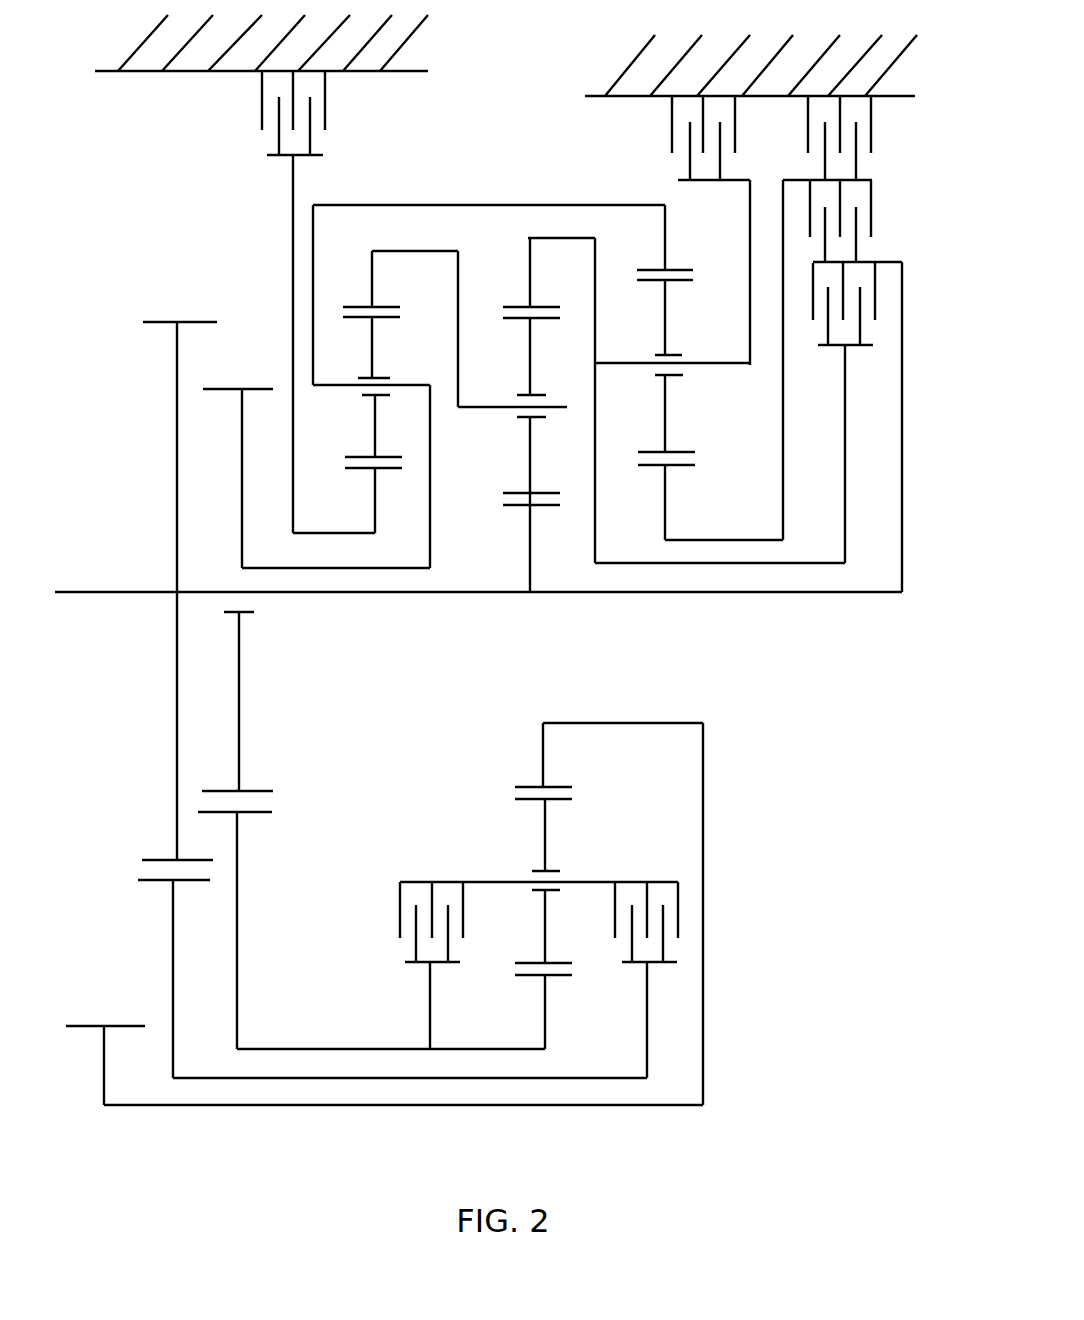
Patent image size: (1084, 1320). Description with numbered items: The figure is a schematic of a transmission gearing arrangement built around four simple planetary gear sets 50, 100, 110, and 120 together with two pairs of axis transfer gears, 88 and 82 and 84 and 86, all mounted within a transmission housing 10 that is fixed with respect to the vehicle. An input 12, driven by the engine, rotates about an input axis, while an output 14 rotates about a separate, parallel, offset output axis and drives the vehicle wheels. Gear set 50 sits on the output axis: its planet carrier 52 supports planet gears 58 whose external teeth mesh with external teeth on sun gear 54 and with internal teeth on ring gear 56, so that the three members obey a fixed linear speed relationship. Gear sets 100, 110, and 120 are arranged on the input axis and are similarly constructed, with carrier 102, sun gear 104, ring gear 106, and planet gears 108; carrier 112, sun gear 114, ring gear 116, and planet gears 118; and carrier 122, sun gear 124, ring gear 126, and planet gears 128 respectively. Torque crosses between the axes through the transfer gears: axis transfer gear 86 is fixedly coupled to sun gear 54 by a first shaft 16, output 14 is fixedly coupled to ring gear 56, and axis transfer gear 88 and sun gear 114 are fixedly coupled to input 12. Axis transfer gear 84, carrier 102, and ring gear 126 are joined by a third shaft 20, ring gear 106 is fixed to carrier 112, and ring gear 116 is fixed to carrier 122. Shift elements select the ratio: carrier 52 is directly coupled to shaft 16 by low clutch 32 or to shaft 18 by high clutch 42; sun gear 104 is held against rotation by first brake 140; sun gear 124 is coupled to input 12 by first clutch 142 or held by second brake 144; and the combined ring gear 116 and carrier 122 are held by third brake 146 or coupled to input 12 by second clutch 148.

The transmission housing 10 is at (408, 38).
The input 12 is at (752, 590).
The output 14 is at (92, 1072).
The first shaft 16 is at (327, 1048).
The shaft 18 is at (602, 1077).
The third shaft 20 is at (257, 567).
The low clutch 32 is at (400, 917).
The high clutch 42 is at (660, 880).
The planetary gear set 50 is at (580, 935).
The planet carrier 52 is at (483, 877).
The sun gear 54 is at (545, 1020).
The ring gear 56 is at (543, 740).
The planet gears 58 is at (547, 852).
The axis transfer gear 82 is at (170, 974).
The axis transfer gear 84 is at (240, 513).
The axis transfer gear 86 is at (236, 984).
The axis transfer gear 88 is at (178, 355).
The planetary gear set 100 is at (350, 420).
The carrier 102 is at (430, 382).
The sun gear 104 is at (347, 464).
The ring gear 106 is at (372, 280).
The planet gears 108 is at (372, 355).
The planetary gear set 110 is at (513, 439).
The carrier 112 is at (452, 410).
The sun gear 114 is at (530, 560).
The ring gear 116 is at (532, 260).
The planet gears 118 is at (530, 363).
The planetary gear set 120 is at (548, 424).
The carrier 122 is at (750, 365).
The sun gear 124 is at (668, 508).
The ring gear 126 is at (662, 242).
The planet gears 128 is at (668, 343).
The first brake 140 is at (325, 108).
The first clutch 142 is at (875, 210).
The second brake 144 is at (873, 115).
The third brake 146 is at (672, 128).
The second clutch 148 is at (810, 292).